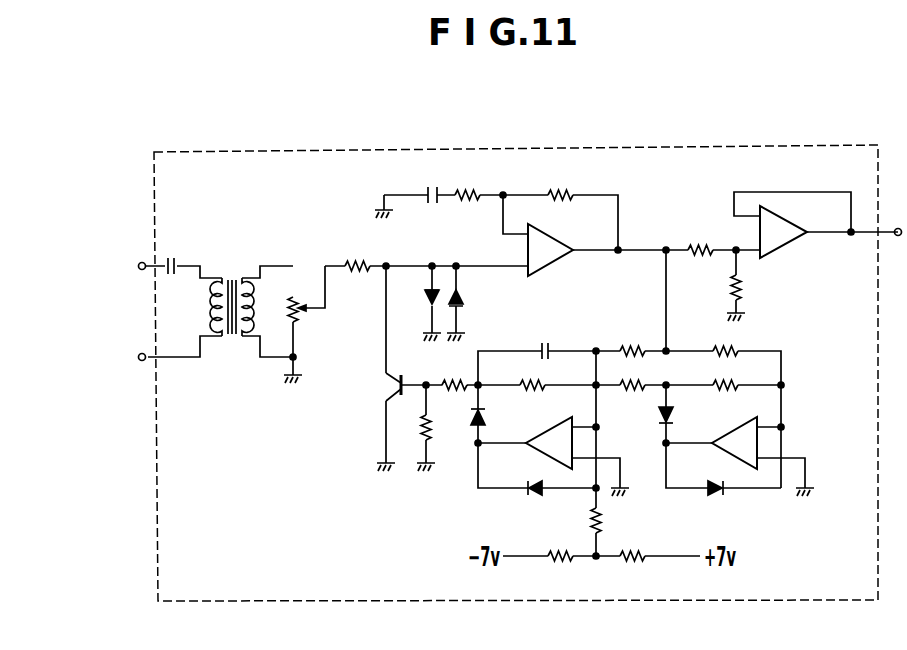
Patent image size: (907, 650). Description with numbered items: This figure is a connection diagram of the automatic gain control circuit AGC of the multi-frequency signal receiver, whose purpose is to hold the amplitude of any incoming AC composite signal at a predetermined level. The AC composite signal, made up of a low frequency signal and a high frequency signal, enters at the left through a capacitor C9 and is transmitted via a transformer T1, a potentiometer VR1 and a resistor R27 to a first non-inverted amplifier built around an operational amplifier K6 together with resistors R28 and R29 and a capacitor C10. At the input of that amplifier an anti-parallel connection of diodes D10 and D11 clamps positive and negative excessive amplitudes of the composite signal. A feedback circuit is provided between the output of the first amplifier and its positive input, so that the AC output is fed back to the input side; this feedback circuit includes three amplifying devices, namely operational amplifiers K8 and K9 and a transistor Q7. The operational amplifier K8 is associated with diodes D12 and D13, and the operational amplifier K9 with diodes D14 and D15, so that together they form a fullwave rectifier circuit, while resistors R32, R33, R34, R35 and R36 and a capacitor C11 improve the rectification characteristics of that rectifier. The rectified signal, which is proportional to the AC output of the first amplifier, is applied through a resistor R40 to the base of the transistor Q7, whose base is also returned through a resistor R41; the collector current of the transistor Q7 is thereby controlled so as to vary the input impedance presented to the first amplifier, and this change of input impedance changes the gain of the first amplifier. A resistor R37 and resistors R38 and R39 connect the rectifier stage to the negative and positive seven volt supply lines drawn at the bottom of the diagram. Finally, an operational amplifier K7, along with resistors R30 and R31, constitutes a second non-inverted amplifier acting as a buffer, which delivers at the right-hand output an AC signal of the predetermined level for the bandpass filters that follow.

The automatic gain control circuit AGC is at (698, 164).
The capacitor C9 is at (170, 253).
The transformer T1 is at (232, 327).
The potentiometer VR1 is at (308, 305).
The resistor R27 is at (358, 251).
The capacitor C10 is at (433, 182).
The resistor R28 is at (468, 180).
The resistor R29 is at (561, 180).
The operational amplifier K6 is at (547, 255).
The diode D10 is at (421, 303).
The diode D11 is at (466, 303).
The resistor R30 is at (701, 234).
The resistor R31 is at (748, 296).
The operational amplifier K7 is at (786, 238).
The capacitor C11 is at (543, 338).
The resistor R32 is at (633, 336).
The resistor R33 is at (726, 336).
The resistor R34 is at (727, 401).
The resistor R35 is at (634, 401).
The resistor R36 is at (537, 399).
The transistor Q7 is at (395, 382).
The resistor R40 is at (452, 371).
The resistor R41 is at (440, 430).
The diode D14 is at (493, 415).
The diode D12 is at (679, 415).
The operational amplifier K9 is at (546, 446).
The operational amplifier K8 is at (731, 446).
The diode D15 is at (537, 505).
The diode D13 is at (720, 505).
The resistor R37 is at (610, 523).
The resistor R38 is at (563, 542).
The resistor R39 is at (636, 571).